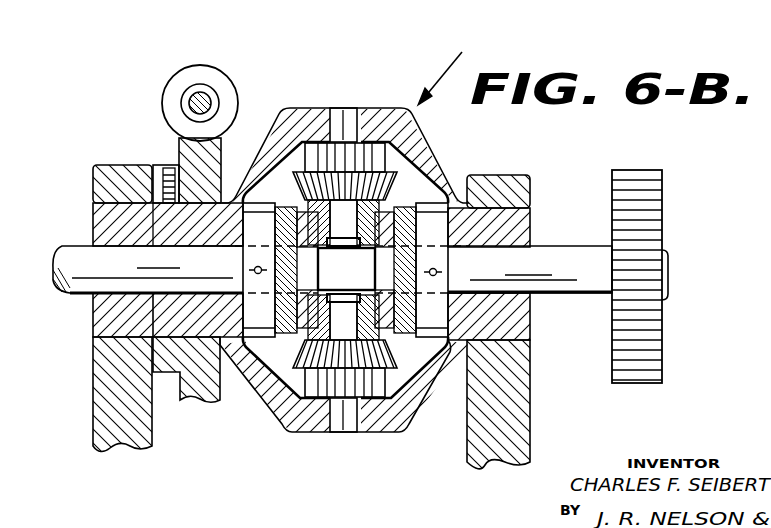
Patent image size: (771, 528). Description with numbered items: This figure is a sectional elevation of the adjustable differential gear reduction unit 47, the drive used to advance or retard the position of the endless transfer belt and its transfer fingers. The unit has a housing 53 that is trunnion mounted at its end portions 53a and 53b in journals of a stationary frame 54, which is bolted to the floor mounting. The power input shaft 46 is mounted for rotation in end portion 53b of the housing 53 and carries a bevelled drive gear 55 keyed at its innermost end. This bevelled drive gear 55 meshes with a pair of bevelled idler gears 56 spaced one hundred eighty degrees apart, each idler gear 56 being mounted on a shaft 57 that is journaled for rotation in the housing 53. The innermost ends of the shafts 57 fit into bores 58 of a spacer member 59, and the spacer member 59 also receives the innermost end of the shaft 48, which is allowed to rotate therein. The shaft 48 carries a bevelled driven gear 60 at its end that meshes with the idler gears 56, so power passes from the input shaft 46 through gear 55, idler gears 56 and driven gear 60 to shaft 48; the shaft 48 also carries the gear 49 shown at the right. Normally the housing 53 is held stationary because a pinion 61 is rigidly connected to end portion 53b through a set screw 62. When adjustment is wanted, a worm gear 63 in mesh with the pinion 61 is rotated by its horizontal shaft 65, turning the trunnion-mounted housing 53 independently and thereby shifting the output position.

The power input shaft 46 is at (70, 254).
The differential gear reduction unit 47 is at (442, 70).
The shaft 48 is at (360, 273).
The gear 49 is at (653, 217).
The housing 53 is at (422, 142).
The end portion 53a is at (517, 222).
The end portion 53b is at (107, 213).
The stationary frame 54 is at (120, 163).
The bevelled drive gear 55 is at (277, 190).
The bevelled idler gears 56 is at (370, 165).
The shaft 57 is at (340, 118).
The bores 58 is at (320, 236).
The spacer member 59 is at (364, 243).
The bevelled driven gear 60 is at (438, 168).
The pinion 61 is at (182, 147).
The set screw 62 is at (170, 165).
The worm gear 63 is at (186, 78).
The horizontal shaft 65 is at (205, 98).